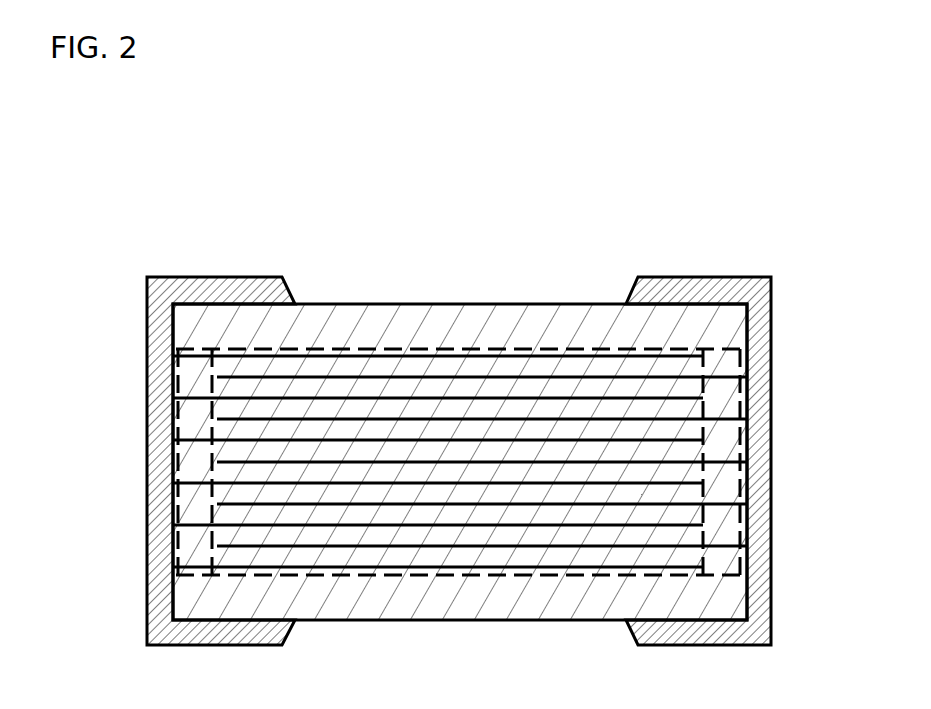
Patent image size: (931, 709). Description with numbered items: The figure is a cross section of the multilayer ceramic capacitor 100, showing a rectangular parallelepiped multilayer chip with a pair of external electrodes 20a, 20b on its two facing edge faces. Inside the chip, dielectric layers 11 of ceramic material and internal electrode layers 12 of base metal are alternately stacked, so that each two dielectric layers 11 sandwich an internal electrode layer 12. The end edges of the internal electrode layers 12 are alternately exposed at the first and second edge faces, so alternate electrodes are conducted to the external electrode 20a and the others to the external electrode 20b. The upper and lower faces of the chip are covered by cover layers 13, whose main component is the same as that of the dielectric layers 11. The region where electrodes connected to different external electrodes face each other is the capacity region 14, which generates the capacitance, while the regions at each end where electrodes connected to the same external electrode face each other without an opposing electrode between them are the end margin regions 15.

The multilayer ceramic capacitor 100 is at (676, 222).
The dielectric layer 11 is at (575, 533).
The internal electrode layer 12 is at (450, 504).
The cover layer 13 is at (358, 318).
The capacity region 14 is at (482, 349).
The end margin region 15 is at (195, 349).
The external electrode 20a is at (172, 277).
The external electrode 20b is at (738, 277).